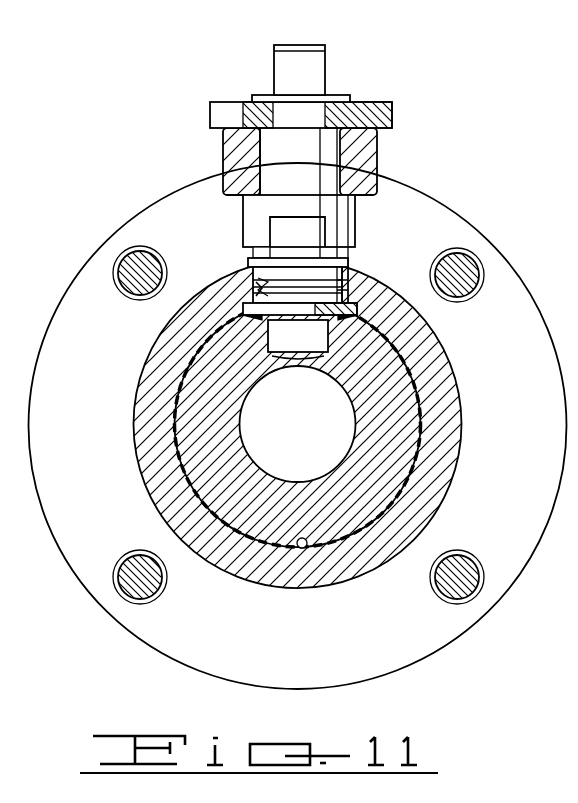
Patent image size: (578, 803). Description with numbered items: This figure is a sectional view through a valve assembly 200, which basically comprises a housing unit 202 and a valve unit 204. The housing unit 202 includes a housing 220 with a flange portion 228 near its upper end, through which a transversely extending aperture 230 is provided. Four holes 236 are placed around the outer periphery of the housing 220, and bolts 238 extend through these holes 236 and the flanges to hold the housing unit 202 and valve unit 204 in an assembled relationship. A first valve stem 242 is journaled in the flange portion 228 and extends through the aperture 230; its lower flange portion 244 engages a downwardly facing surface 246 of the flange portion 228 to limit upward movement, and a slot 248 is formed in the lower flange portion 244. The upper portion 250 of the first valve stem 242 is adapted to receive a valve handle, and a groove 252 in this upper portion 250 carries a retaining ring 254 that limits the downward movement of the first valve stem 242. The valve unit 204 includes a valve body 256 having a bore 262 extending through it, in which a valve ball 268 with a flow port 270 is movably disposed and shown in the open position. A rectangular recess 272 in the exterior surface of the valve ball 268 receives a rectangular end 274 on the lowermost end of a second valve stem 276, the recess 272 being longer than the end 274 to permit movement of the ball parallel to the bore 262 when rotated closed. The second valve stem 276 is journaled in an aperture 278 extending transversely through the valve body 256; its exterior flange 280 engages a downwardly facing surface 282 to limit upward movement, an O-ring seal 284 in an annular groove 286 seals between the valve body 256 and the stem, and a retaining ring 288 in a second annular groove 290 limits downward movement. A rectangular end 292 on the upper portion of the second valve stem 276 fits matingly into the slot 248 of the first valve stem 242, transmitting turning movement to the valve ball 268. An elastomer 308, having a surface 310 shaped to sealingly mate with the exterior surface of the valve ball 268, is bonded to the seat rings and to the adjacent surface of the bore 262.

The valve assembly 200 is at (406, 125).
The housing unit 202 is at (418, 141).
The valve unit 204 is at (270, 590).
The housing 220 is at (400, 190).
The flange portion 228 is at (240, 146).
The transversely extending aperture 230 is at (264, 158).
The holes 236 is at (138, 252).
The bolts 238 is at (135, 263).
The first valve stem 242 is at (340, 168).
The lower flange portion 244 is at (349, 229).
The downwardly facing surface 246 is at (243, 200).
The slot 248 is at (257, 232).
The upper portion 250 is at (313, 62).
The groove 252 is at (302, 97).
The retaining ring 254 is at (262, 97).
The valve body 256 is at (438, 497).
The bore 262 is at (311, 548).
The valve ball 268 is at (400, 423).
The flow port 270 is at (314, 421).
The rectangular recess 272 is at (331, 356).
The rectangular end 274 is at (314, 343).
The second valve stem 276 is at (258, 280).
The aperture 278 is at (264, 282).
The exterior flange 280 is at (243, 310).
The downwardly facing surface 282 is at (355, 302).
The O-ring seal 284 is at (256, 296).
The annular groove 286 is at (348, 278).
The retaining ring 288 is at (349, 263).
The second annular groove 290 is at (245, 250).
The rectangular end 292 is at (297, 230).
The elastomer 308 is at (382, 512).
The surface 310 is at (245, 530).